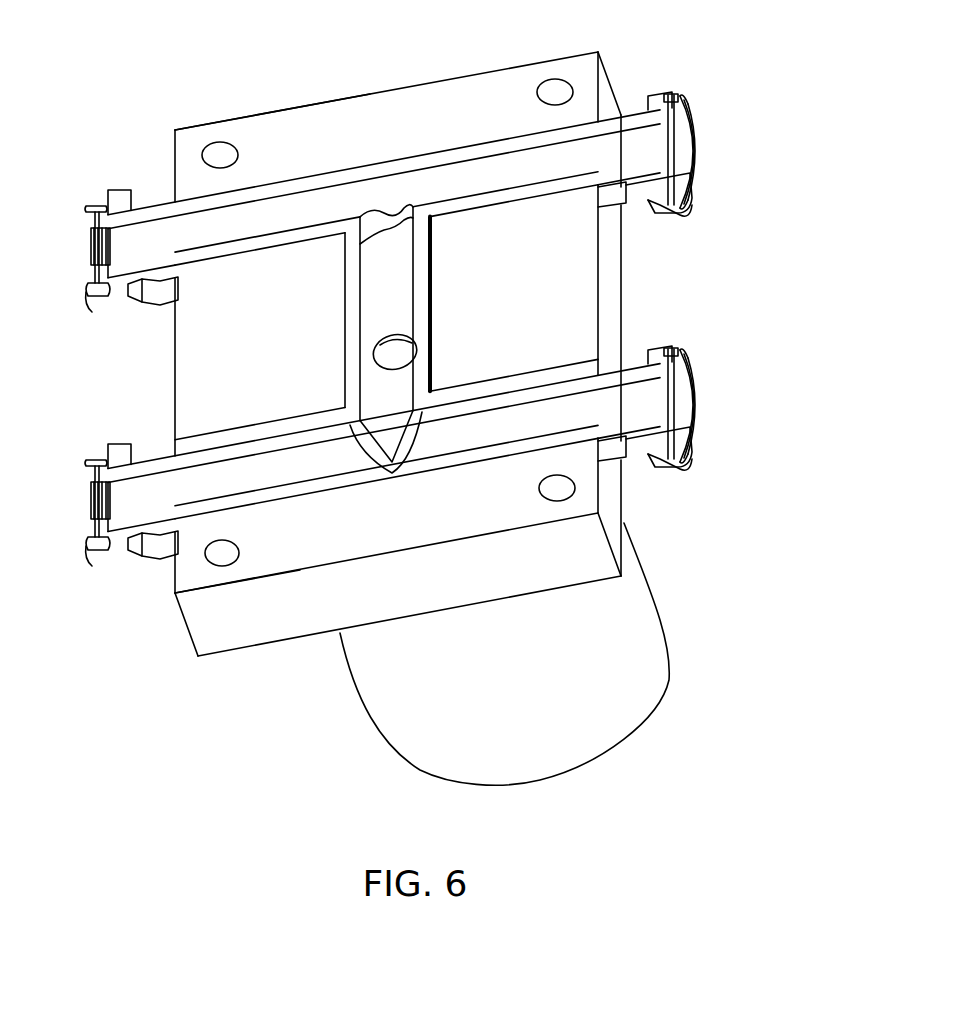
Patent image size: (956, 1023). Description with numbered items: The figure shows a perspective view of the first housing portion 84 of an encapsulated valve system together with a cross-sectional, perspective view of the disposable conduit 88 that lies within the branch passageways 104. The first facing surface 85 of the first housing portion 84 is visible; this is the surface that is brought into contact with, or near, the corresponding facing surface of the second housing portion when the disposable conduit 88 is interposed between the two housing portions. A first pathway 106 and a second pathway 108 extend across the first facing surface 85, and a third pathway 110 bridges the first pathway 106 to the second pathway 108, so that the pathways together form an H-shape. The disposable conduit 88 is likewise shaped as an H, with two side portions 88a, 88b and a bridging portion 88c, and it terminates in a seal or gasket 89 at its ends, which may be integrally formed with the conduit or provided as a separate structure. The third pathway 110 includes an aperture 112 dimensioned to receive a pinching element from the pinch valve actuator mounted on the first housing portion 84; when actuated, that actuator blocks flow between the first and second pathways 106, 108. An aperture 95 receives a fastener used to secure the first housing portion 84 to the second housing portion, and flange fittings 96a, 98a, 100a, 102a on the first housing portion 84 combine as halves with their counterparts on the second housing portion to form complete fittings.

The first housing portion 84 is at (508, 68).
The first facing surface 85 is at (372, 93).
The disposable conduit 88 is at (419, 418).
The side portion 88a is at (450, 151).
The side portion 88b is at (500, 455).
The bridging portion 88c is at (432, 388).
The seal or gasket 89 is at (95, 207).
The aperture 95 is at (222, 148).
The flange fitting 96a is at (665, 463).
The flange fitting 98a is at (667, 212).
The flange fitting 100a is at (128, 572).
The flange fitting 102a is at (128, 312).
The branch passageways 104 is at (444, 220).
The first pathway 106 is at (258, 441).
The second pathway 108 is at (218, 248).
The third pathway 110 is at (447, 327).
The aperture 112 is at (384, 340).